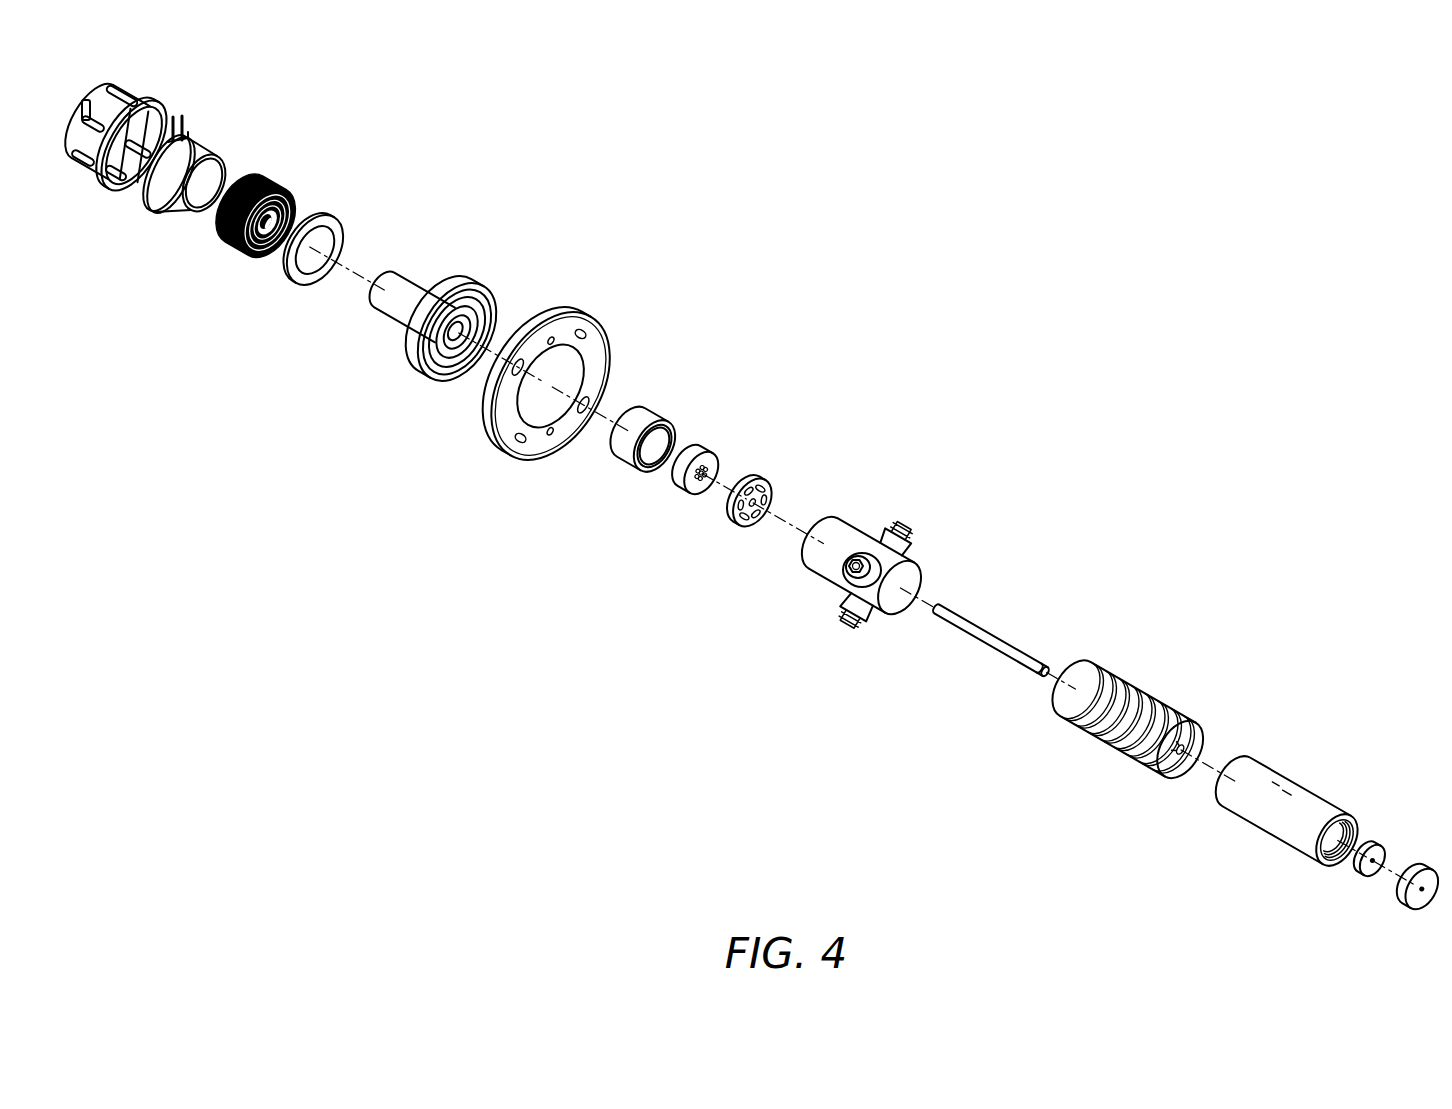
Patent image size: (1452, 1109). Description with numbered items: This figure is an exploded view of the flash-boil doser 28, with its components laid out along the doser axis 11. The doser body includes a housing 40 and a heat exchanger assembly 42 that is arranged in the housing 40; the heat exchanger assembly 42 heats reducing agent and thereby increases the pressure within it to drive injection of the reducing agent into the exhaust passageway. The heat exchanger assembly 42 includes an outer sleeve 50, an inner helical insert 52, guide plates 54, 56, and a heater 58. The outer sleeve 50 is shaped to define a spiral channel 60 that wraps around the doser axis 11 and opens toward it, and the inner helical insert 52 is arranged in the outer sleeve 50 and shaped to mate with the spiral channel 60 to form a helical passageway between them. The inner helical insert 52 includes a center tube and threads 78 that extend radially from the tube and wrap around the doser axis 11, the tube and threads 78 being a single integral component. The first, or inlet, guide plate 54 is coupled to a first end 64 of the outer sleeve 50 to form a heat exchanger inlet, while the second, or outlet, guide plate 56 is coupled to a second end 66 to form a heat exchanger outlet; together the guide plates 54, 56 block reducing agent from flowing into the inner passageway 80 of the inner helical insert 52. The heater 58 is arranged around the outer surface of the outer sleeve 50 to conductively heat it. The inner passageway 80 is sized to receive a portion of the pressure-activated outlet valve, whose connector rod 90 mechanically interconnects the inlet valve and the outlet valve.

The doser axis 11 is at (368, 275).
The flash-boil doser 28 is at (967, 155).
The housing 40 is at (655, 347).
The heat exchanger assembly 42 is at (1320, 645).
The outer sleeve 50 is at (1292, 760).
The inner helical insert 52 is at (1133, 681).
The first guide plate 54 is at (768, 472).
The second guide plate 56 is at (1388, 850).
The heater 58 is at (873, 512).
The spiral channel 60 is at (1357, 840).
The first end 64 is at (1215, 792).
The second end 66 is at (1353, 872).
The threads 78 is at (1107, 672).
The inner passageway 80 is at (1184, 748).
The connector rod 90 is at (998, 617).